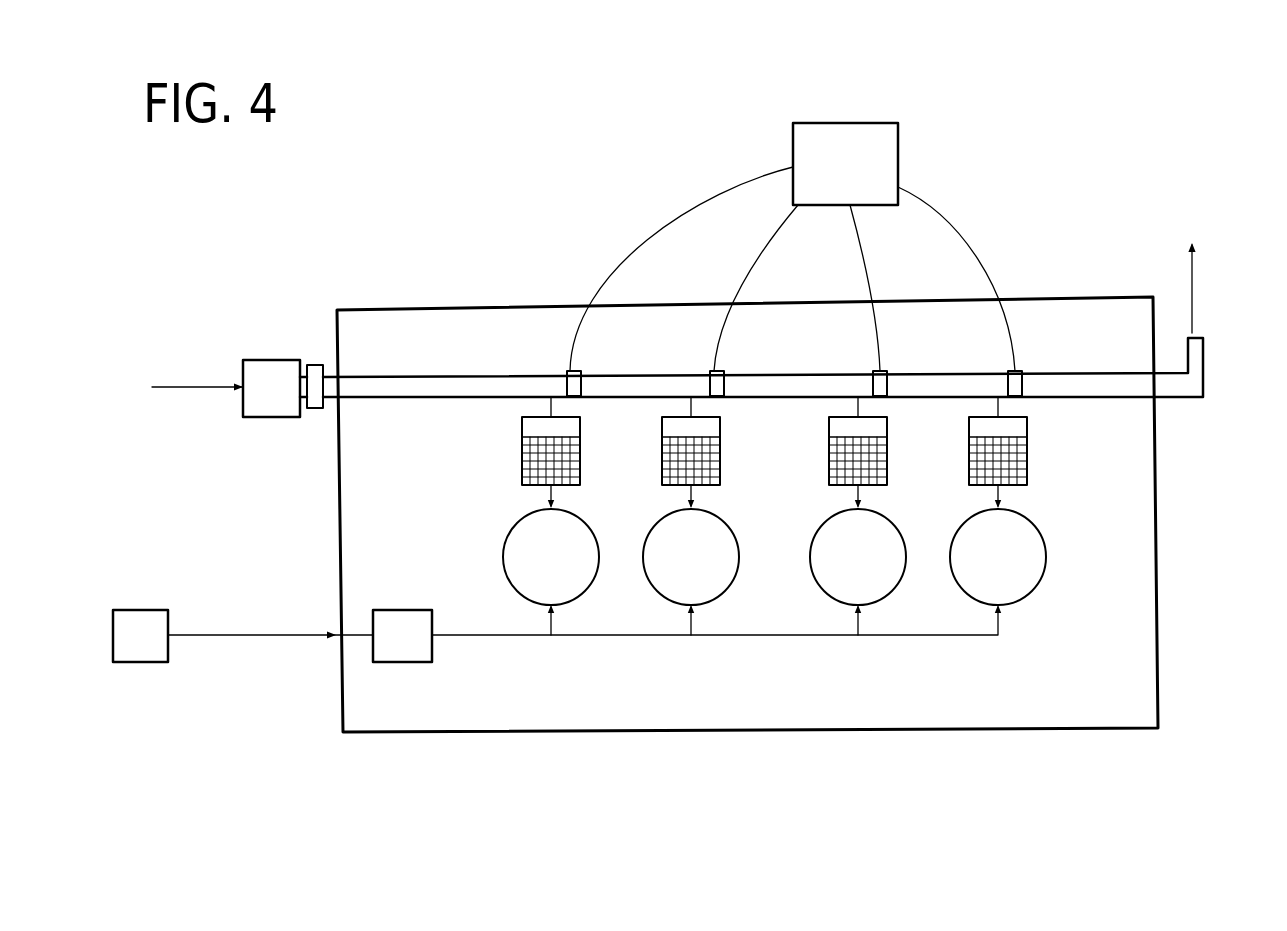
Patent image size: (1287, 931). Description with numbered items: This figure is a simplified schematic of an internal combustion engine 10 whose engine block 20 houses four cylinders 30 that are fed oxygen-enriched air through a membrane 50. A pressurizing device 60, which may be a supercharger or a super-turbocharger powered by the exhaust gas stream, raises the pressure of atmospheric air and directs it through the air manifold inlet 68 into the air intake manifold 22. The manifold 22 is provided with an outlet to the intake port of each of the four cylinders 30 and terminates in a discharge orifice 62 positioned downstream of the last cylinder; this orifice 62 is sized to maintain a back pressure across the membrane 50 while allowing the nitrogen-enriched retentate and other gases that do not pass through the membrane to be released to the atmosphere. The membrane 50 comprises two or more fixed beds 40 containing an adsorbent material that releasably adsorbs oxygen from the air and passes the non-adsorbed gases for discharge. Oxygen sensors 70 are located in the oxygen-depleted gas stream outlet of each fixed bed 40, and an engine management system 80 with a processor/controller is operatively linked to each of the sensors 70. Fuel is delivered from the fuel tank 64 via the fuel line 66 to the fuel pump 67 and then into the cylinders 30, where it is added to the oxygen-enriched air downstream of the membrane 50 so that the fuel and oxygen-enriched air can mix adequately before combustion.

The internal combustion engine 10 is at (544, 229).
The engine block 20 is at (475, 732).
The air intake manifold 22 is at (641, 385).
The cylinder 30 is at (665, 578).
The fixed bed 40 is at (662, 455).
The membrane 50 is at (662, 470).
The pressurizing device 60 is at (284, 398).
The discharge orifice 62 is at (1203, 355).
The fuel tank 64 is at (153, 646).
The fuel line 66 is at (178, 635).
The fuel pump 67 is at (415, 646).
The air manifold inlet 68 is at (315, 362).
The oxygen sensor 70 is at (569, 371).
The engine management system 80 is at (860, 177).